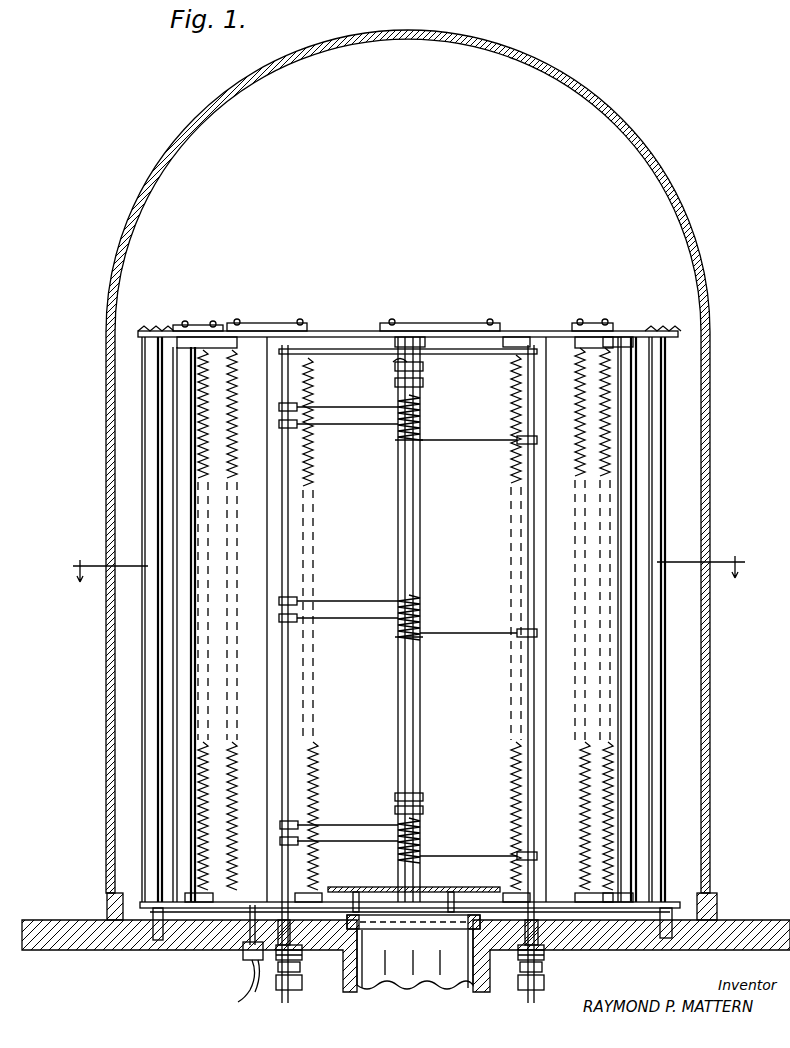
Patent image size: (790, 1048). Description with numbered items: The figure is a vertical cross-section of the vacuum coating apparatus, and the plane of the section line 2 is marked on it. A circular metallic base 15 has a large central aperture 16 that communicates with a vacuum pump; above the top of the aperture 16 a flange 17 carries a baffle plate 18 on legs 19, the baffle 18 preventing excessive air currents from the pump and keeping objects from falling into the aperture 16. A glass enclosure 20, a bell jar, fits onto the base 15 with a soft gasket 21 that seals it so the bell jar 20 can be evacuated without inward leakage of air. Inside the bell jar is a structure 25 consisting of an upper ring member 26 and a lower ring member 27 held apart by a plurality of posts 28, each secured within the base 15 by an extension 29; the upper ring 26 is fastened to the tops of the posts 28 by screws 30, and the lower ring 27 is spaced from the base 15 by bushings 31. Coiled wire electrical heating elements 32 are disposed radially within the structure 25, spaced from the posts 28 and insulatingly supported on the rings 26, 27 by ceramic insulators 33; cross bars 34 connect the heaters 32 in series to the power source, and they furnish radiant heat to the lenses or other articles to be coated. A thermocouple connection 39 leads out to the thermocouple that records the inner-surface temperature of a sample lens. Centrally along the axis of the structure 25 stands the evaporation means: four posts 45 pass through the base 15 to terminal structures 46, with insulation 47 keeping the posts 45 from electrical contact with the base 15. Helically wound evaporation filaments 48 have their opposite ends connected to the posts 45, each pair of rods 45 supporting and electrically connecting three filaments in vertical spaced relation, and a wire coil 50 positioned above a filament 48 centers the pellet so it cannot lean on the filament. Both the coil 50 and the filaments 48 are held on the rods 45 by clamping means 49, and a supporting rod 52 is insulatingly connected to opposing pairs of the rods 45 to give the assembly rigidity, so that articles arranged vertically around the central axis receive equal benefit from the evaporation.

The section line 2 is at (405, 565).
The circular metallic base 15 is at (42, 935).
The aperture 16 is at (410, 975).
The flange 17 is at (425, 930).
The baffle plate 18 is at (382, 887).
The legs 19 is at (280, 841).
The glass enclosure 20 is at (670, 184).
The soft gasket 21 is at (107, 900).
The structure 25 is at (520, 267).
The upper ring member 26 is at (357, 331).
The lower ring member 27 is at (505, 893).
The supports or posts 28 is at (165, 612).
The extension 29 is at (156, 940).
The screws 30 is at (150, 329).
The bushings 31 is at (150, 905).
The coiled wire electrical heating elements 32 is at (510, 417).
The ceramic insulators 33 is at (310, 331).
The cross bars 34 is at (255, 323).
The thermocouple connection 39 is at (243, 958).
The posts 45 is at (400, 494).
The terminal structures 46 is at (280, 990).
The insulation 47 is at (300, 945).
The evaporation filaments 48 is at (398, 441).
The clamping means 49 is at (423, 379).
The wire coil 50 is at (420, 410).
The supporting rod 52 is at (390, 366).